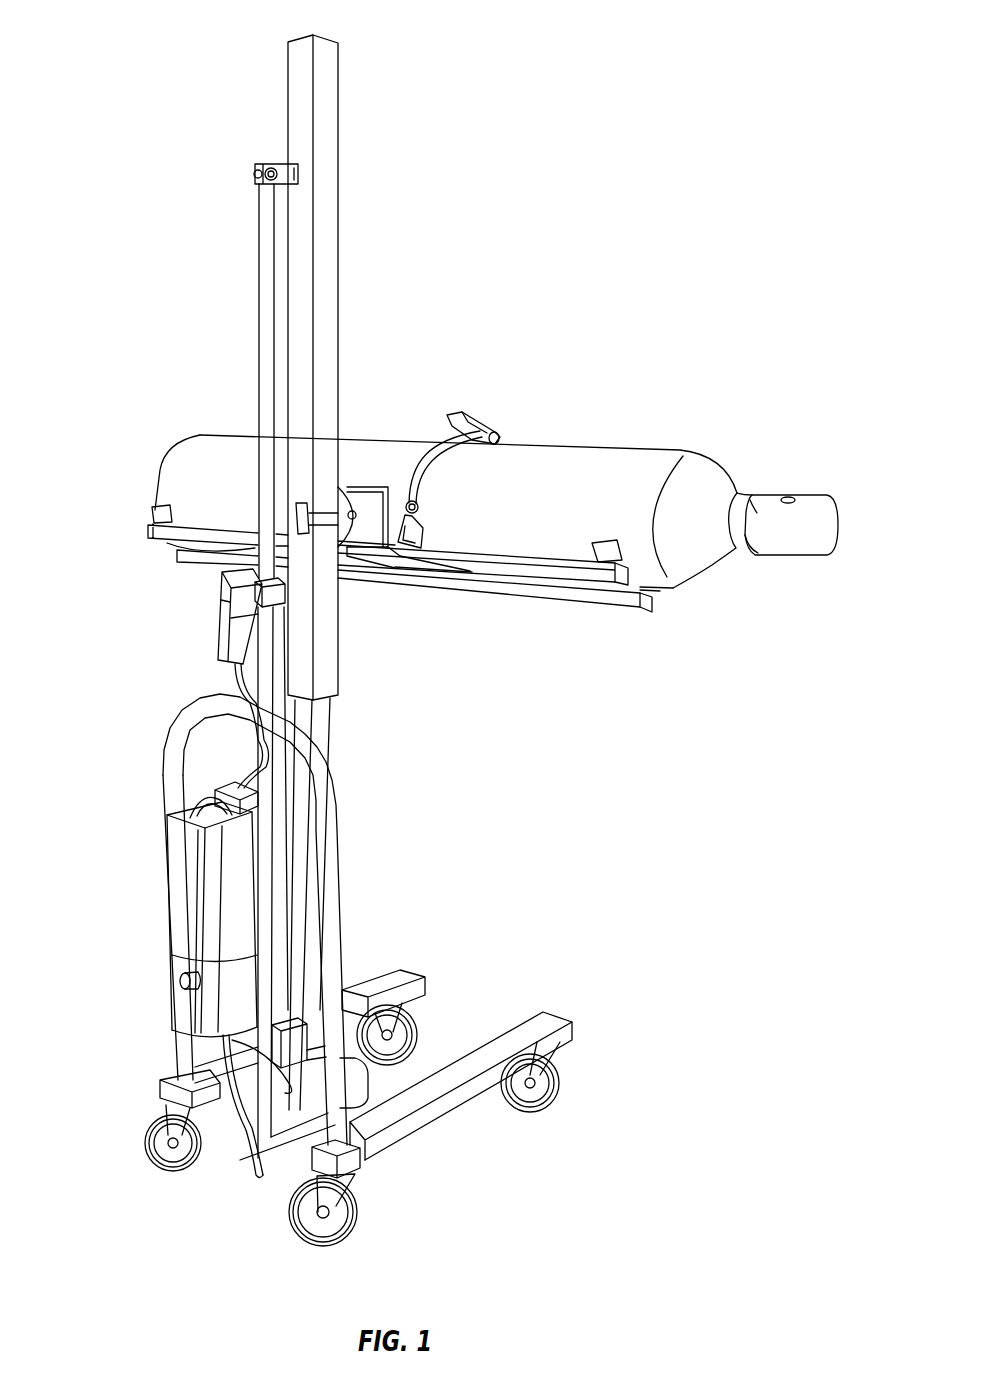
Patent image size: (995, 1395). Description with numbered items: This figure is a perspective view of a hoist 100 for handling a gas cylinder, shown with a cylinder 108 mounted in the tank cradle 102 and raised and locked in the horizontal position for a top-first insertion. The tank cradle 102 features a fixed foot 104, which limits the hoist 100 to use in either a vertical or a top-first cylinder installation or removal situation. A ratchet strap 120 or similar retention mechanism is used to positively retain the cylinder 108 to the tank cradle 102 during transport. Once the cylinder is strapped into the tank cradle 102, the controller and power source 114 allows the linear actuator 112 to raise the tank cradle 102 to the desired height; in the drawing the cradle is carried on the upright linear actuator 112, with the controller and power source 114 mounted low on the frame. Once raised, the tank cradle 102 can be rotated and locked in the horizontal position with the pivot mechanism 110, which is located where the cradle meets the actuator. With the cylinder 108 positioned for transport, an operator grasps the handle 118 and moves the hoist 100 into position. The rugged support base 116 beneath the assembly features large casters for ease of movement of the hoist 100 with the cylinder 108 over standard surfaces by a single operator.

The hoist 100 is at (146, 41).
The tank cradle 102 is at (575, 598).
The fixed foot 104 is at (152, 518).
The cylinder 108 is at (710, 475).
The pivot mechanism 110 is at (346, 490).
The linear actuator 112 is at (331, 232).
The controller and power source 114 is at (178, 896).
The support base 116 is at (550, 1015).
The handle 118 is at (180, 722).
The strap 120 is at (483, 428).